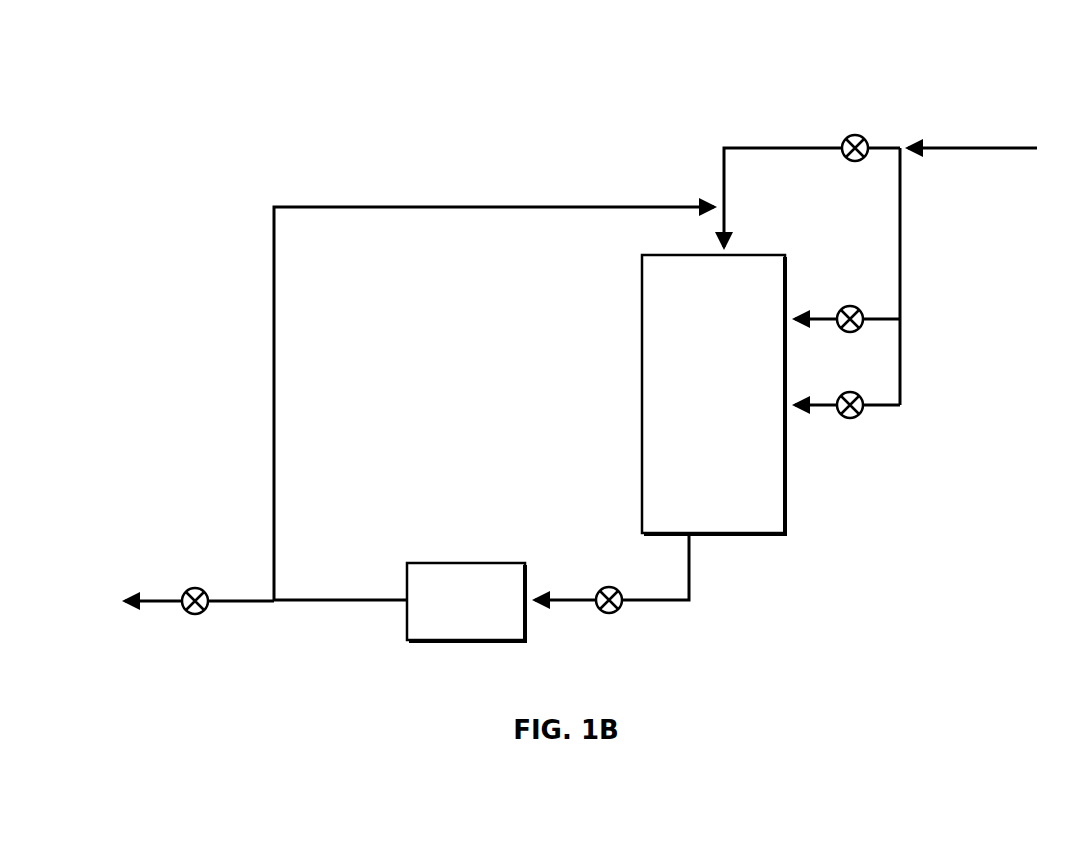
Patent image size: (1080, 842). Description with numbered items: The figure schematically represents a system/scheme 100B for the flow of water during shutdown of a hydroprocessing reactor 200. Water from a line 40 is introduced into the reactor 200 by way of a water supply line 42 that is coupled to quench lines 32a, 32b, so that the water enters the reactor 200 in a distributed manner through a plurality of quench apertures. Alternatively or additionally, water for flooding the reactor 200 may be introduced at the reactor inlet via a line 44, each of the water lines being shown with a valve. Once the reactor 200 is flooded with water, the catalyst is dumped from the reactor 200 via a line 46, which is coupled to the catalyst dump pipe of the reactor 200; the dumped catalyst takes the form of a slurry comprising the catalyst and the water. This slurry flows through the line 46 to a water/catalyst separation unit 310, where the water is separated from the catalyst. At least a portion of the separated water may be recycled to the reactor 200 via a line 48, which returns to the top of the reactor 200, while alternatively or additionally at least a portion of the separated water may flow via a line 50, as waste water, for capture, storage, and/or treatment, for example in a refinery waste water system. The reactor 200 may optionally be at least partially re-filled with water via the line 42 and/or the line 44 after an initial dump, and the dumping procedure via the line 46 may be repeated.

The system/scheme 100B is at (893, 92).
The reactor 200 is at (713, 394).
The water/catalyst separation unit 310 is at (466, 602).
The line 40 is at (975, 148).
The water supply line 42 is at (902, 225).
The line 44 is at (760, 148).
The quench line 32a is at (810, 322).
The quench line 32b is at (812, 408).
The line 46 is at (691, 578).
The line 48 is at (276, 385).
The line 50 is at (155, 603).